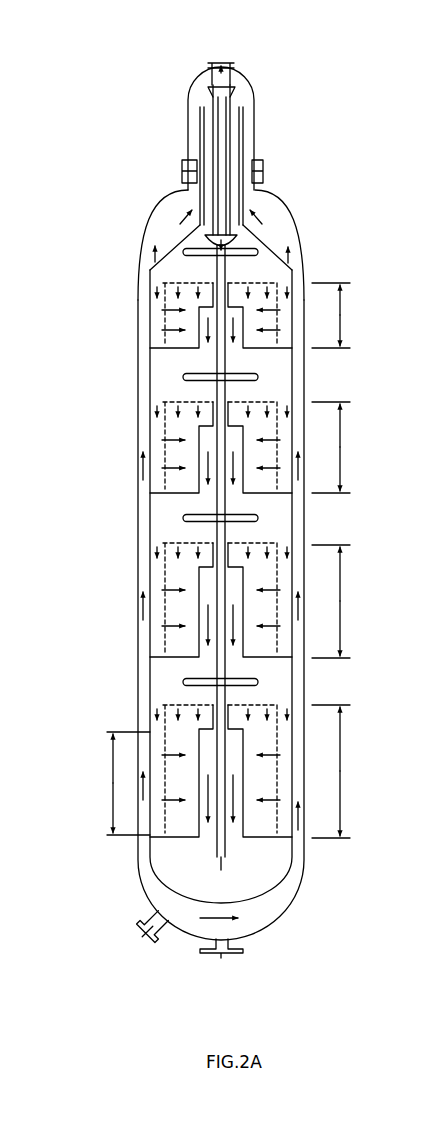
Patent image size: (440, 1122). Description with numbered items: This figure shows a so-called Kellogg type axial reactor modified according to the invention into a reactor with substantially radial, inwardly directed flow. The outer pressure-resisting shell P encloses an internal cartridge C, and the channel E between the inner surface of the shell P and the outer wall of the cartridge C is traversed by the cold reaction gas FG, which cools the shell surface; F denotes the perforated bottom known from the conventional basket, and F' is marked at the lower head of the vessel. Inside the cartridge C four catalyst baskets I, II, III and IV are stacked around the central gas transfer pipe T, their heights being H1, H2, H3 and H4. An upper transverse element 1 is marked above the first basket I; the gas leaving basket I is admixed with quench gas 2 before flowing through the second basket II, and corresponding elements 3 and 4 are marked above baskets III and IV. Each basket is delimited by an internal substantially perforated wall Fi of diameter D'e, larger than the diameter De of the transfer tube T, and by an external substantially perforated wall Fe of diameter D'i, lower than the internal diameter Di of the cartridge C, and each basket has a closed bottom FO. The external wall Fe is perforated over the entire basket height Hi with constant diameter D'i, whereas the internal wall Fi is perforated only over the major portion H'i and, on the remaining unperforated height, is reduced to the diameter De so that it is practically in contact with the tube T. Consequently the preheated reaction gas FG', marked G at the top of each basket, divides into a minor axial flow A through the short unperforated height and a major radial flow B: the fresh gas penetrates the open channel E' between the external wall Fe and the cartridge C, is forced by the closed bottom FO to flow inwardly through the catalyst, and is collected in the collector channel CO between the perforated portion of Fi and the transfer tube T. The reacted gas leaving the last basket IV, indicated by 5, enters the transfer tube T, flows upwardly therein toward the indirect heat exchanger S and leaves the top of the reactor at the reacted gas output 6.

The reacted gas output 6 is at (221, 62).
The indirect heat exchanger S is at (231, 146).
The outer pressure-resisting shell P is at (137, 598).
The channel E is at (180, 586).
The open channel E' is at (115, 441).
The first header 1 is at (220, 252).
The quench gas 2 is at (259, 378).
The third header 3 is at (260, 518).
The fourth header 4 is at (260, 682).
The reacted gas leaving the last basket 5 is at (220, 887).
The first catalyst basket I is at (265, 348).
The second catalyst basket II is at (265, 487).
The third catalyst basket III is at (263, 652).
The fourth catalyst basket IV is at (260, 742).
The minor axial flow A is at (185, 483).
The gas distribution G is at (240, 709).
The height of first basket H1 is at (331, 315).
The height of second basket H2 is at (331, 447).
The height of third basket H3 is at (331, 601).
The height of fourth basket H4 is at (331, 771).
The catalyst basket height Hi is at (342, 780).
The perforated height of internal wall H'i is at (93, 783).
The perforated bottom F is at (255, 942).
The bottom head F' is at (312, 896).
The cold reaction gas FG is at (130, 943).
The preheated reaction gas FG' is at (120, 254).
The major radial flow B is at (188, 318).
The internal substantially perforated wall Fi is at (183, 367).
The external substantially perforated wall Fe is at (347, 318).
The closed bottom FO is at (257, 358).
The collector channel CO is at (210, 442).
The internal cartridge C is at (148, 670).
The diameter of external wall D'i is at (118, 713).
The internal diameter of cartridge Di is at (150, 748).
The central gas transfer pipe T is at (217, 762).
The diameter of transfer tube De is at (217, 813).
The diameter of internal wall D'e is at (127, 868).